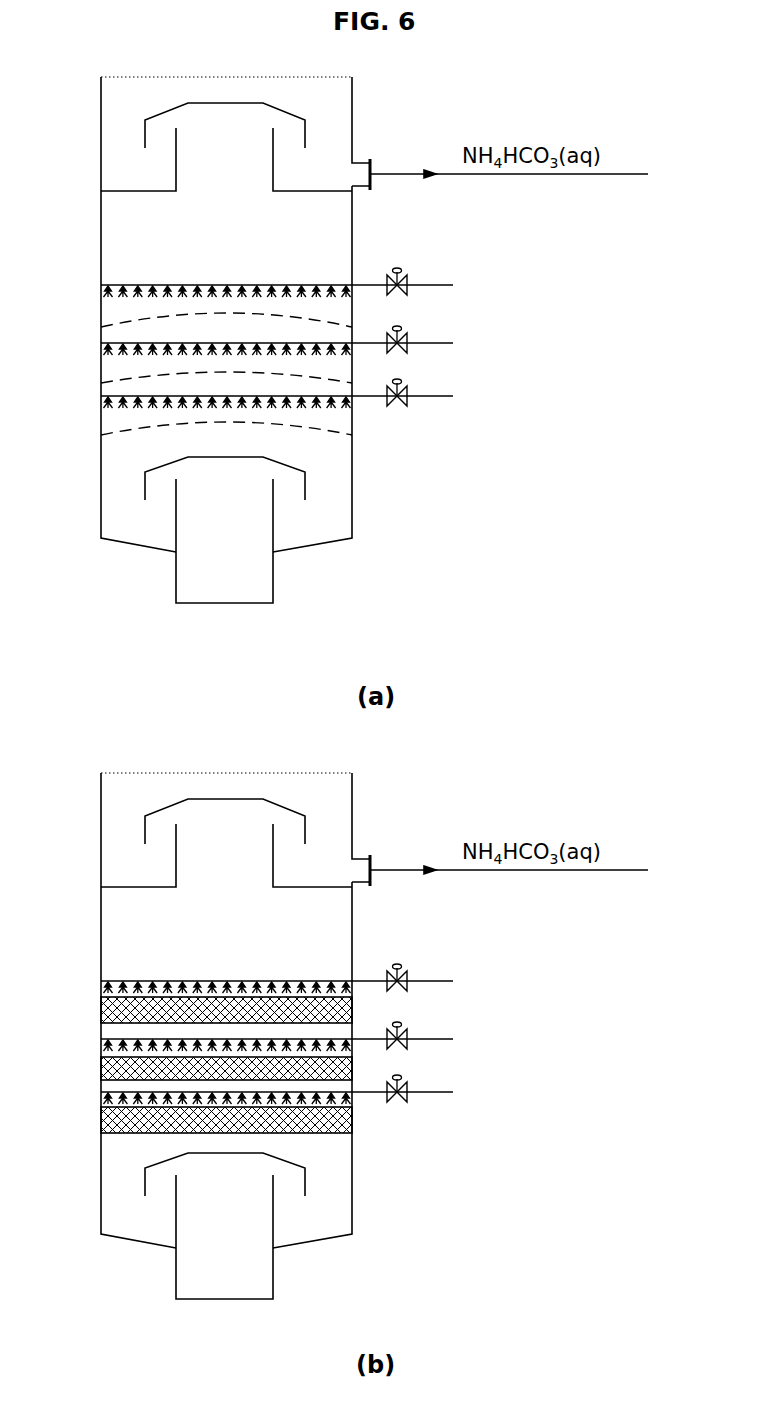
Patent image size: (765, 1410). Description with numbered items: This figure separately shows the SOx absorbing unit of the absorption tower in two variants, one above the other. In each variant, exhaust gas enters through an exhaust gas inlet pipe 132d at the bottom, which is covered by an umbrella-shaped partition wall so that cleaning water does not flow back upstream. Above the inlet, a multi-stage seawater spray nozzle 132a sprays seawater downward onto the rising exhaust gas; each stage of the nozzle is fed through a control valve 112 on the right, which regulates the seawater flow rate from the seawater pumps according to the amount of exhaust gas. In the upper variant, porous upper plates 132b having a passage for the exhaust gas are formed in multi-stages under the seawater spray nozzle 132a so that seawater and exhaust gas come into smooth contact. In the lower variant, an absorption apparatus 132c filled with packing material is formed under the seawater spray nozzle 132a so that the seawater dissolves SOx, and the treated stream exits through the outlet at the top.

The seawater spray nozzle 132a is at (226, 628).
The porous upper plate 132b is at (226, 674).
The absorption apparatus 132c is at (226, 761).
The exhaust gas inlet pipe 132d is at (224, 889).
The control valve 112 is at (402, 699).